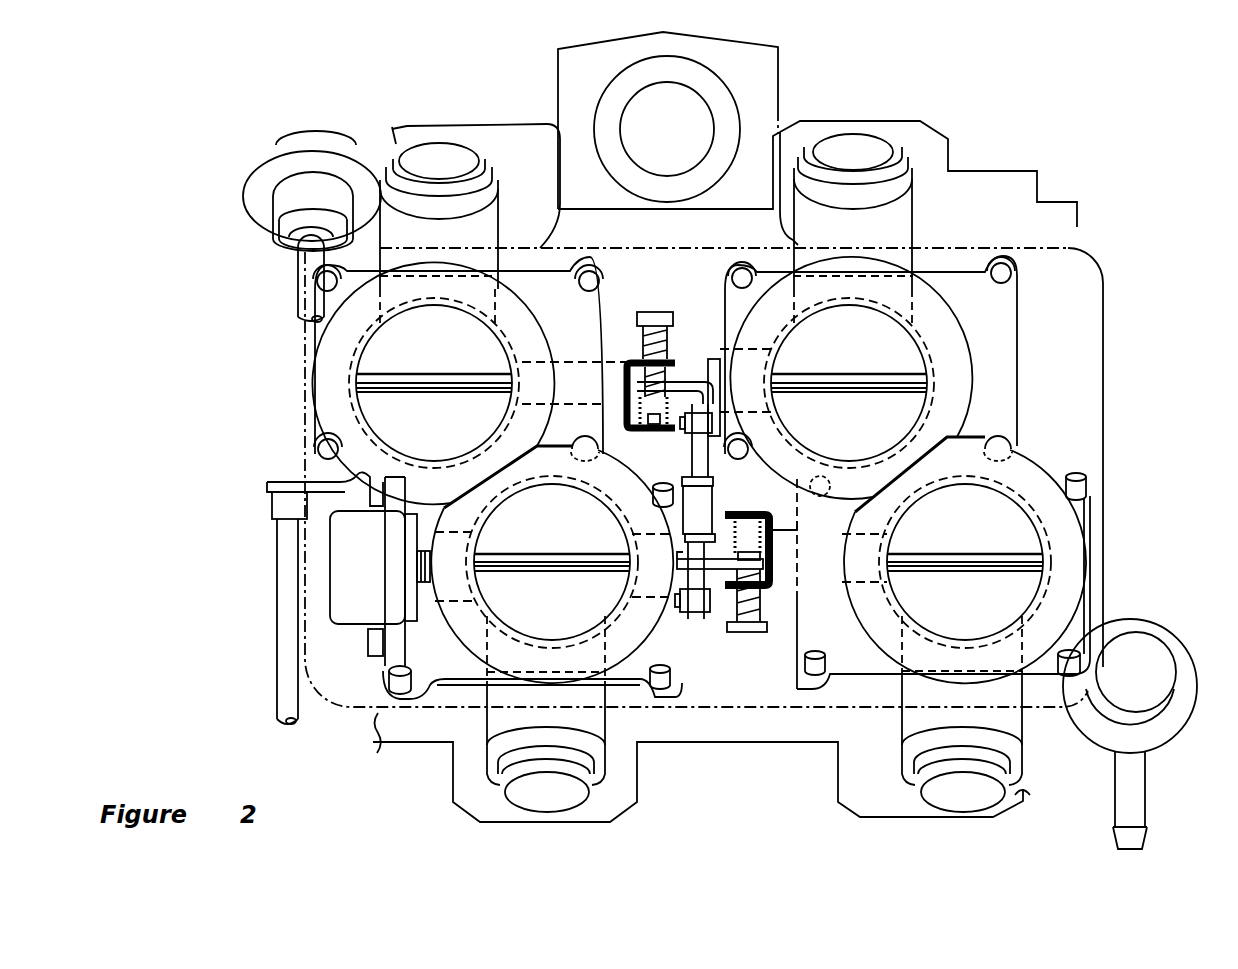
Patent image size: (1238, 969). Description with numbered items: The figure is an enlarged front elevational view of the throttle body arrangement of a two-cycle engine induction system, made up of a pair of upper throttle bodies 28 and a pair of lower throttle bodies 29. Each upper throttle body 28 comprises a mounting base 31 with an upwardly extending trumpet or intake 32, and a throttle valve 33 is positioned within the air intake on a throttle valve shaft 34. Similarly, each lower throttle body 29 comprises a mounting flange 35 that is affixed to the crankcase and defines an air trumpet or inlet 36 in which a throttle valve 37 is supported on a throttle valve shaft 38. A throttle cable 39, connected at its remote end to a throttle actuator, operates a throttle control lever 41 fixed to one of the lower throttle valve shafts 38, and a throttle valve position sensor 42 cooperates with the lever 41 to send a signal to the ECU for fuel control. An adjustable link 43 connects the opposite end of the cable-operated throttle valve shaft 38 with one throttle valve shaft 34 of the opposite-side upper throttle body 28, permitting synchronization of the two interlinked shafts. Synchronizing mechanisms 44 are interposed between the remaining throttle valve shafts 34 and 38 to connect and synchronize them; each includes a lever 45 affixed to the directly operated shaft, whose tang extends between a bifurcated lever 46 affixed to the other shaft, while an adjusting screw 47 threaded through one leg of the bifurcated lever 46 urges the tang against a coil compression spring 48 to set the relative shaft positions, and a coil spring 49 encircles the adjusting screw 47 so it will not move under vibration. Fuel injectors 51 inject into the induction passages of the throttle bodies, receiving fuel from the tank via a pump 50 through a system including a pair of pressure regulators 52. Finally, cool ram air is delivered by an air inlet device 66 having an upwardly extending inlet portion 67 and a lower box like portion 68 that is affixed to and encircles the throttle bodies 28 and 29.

The upper throttle body 28 is at (315, 367).
The lower throttle body 29 is at (453, 686).
The mounting base 31 is at (1020, 380).
The intake 32 is at (497, 345).
The throttle valve 33 is at (385, 350).
The throttle valve shaft 34 is at (432, 376).
The mounting flange 35 is at (415, 703).
The inlet 36 is at (490, 612).
The throttle valve 37 is at (553, 632).
The throttle valve shaft 38 is at (551, 557).
The throttle cable 39 is at (277, 616).
The throttle control lever 41 is at (303, 478).
The throttle valve position sensor 42 is at (348, 625).
The adjustable link 43 is at (716, 504).
The synchronizing mechanism 44 is at (680, 348).
The lever 45 is at (677, 565).
The bifurcated lever 46 is at (778, 558).
The adjusting screw 47 is at (742, 638).
The coil compression spring 48 is at (778, 523).
The coil spring 49 is at (781, 632).
The pump 50 is at (605, 92).
The fuel injector 51 is at (434, 143).
The pressure regulator 52 is at (312, 130).
The air inlet device 66 is at (783, 58).
The inlet portion 67 is at (783, 89).
The box like portion 68 is at (512, 248).